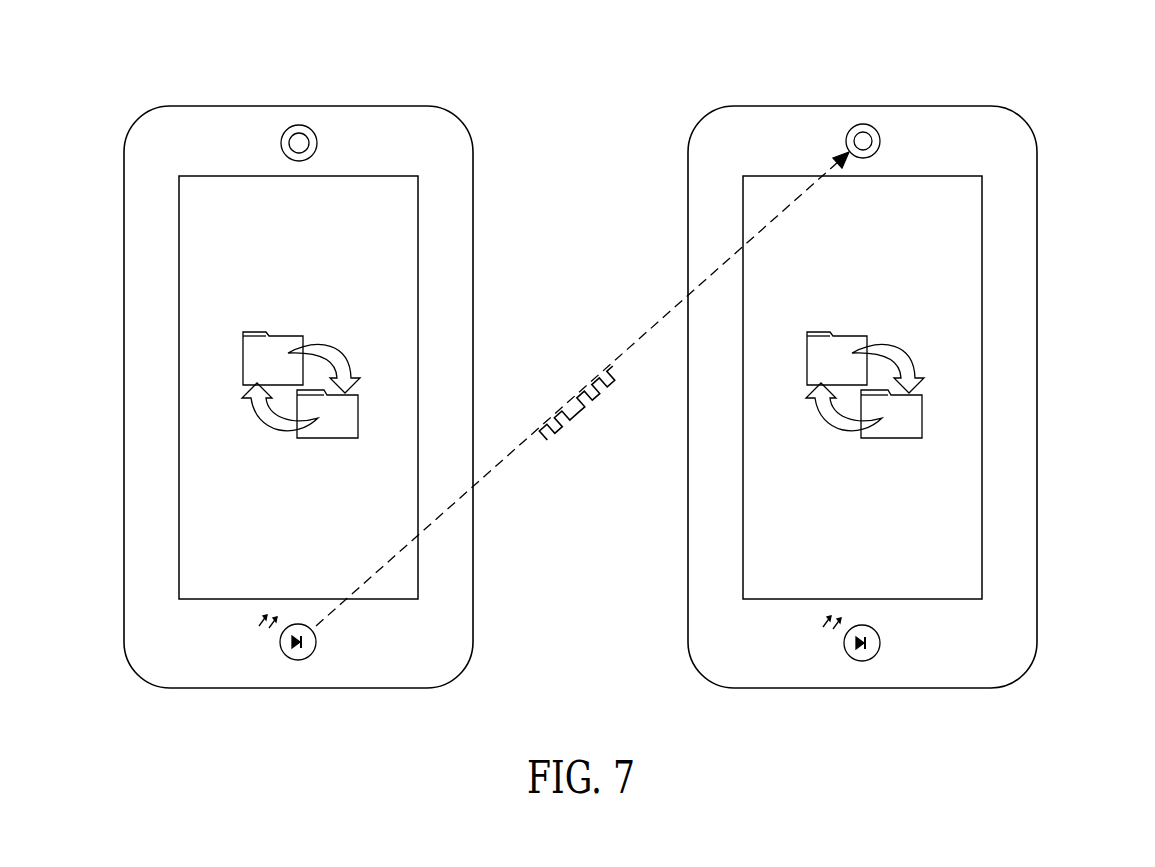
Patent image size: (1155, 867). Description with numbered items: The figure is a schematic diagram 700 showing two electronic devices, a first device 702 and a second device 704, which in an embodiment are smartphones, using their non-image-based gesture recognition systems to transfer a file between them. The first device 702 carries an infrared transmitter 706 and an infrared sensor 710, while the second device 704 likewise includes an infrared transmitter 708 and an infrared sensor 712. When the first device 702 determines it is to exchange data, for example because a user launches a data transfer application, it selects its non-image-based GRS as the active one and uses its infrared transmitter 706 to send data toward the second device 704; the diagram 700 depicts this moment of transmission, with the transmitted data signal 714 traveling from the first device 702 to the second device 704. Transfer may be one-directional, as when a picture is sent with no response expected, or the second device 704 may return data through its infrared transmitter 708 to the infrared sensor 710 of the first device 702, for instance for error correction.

The schematic diagram 700 is at (1070, 65).
The first device 702 is at (270, 397).
The second device 704 is at (835, 397).
The infrared transmitter 706 is at (316, 643).
The infrared transmitter 708 is at (880, 645).
The infrared sensor 710 is at (281, 144).
The infrared sensor 712 is at (846, 142).
The encoded data signal 714 is at (553, 372).